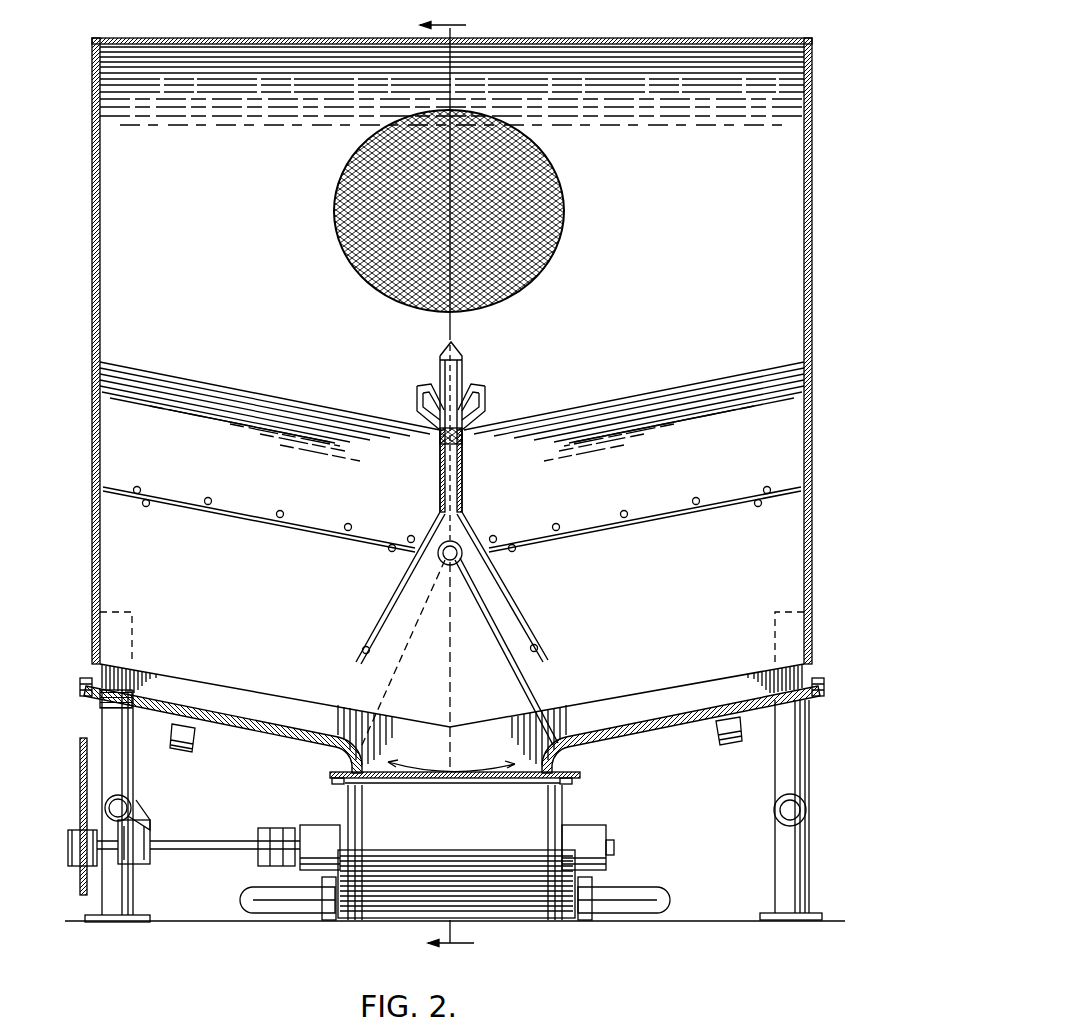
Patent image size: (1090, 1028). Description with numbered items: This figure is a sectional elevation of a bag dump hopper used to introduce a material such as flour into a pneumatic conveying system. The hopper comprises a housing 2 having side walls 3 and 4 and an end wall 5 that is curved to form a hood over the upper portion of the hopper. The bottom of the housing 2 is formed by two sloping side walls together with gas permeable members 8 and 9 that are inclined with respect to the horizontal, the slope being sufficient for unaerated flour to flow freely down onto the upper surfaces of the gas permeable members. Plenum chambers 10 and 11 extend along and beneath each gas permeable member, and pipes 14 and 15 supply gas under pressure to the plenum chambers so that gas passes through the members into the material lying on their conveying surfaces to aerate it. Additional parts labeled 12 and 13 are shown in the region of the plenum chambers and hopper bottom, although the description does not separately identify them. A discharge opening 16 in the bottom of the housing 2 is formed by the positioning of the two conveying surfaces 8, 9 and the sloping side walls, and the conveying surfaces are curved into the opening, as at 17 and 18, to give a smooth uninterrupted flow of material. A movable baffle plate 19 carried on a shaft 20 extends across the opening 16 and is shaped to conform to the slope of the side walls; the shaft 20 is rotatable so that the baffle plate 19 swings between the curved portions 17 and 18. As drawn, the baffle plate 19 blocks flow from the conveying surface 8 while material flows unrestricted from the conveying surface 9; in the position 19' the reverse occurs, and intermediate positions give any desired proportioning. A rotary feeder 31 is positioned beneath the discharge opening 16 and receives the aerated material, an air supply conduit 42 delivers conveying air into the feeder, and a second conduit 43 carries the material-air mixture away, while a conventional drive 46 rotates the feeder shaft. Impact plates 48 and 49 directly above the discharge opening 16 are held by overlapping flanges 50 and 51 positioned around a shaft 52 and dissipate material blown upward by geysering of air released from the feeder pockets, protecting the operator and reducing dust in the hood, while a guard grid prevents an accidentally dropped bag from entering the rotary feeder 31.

The housing 2 is at (479, 211).
The side wall 3 is at (822, 240).
The side wall 4 is at (92, 232).
The end wall 5 is at (785, 164).
The gas permeable member 8 is at (653, 722).
The gas permeable member 9 is at (226, 714).
The plenum chamber 10 is at (687, 722).
The plenum chamber 11 is at (262, 736).
The right trough bottom 12 is at (612, 738).
The left trough bottom 13 is at (295, 746).
The pipe 14 is at (726, 748).
The pipe 15 is at (183, 752).
The discharge opening 16 is at (451, 753).
The curved portion 17 is at (365, 748).
The curved portion 18 is at (542, 757).
The movable baffle plate 19 is at (508, 651).
The baffle plate position 19' is at (395, 652).
The shaft 20 is at (436, 557).
The rotary feeder 31 is at (545, 796).
The air supply conduit 42 is at (612, 912).
The second conduit 43 is at (278, 920).
The drive 46 is at (83, 898).
The impact plate 48 is at (532, 610).
The impact plate 49 is at (382, 608).
The overlapping flange 50 is at (440, 431).
The overlapping flange 51 is at (462, 433).
The shaft 52 is at (441, 457).